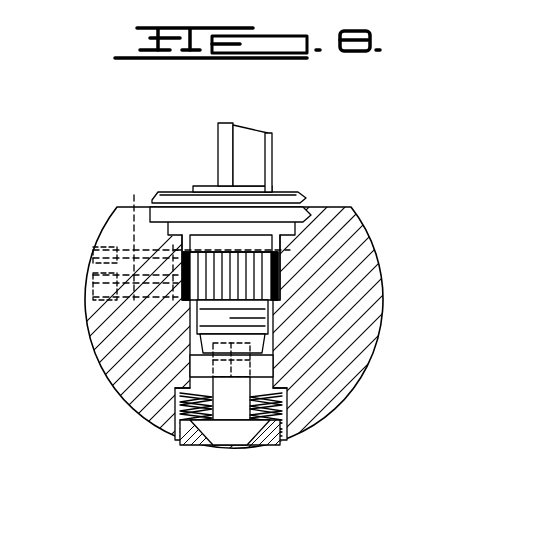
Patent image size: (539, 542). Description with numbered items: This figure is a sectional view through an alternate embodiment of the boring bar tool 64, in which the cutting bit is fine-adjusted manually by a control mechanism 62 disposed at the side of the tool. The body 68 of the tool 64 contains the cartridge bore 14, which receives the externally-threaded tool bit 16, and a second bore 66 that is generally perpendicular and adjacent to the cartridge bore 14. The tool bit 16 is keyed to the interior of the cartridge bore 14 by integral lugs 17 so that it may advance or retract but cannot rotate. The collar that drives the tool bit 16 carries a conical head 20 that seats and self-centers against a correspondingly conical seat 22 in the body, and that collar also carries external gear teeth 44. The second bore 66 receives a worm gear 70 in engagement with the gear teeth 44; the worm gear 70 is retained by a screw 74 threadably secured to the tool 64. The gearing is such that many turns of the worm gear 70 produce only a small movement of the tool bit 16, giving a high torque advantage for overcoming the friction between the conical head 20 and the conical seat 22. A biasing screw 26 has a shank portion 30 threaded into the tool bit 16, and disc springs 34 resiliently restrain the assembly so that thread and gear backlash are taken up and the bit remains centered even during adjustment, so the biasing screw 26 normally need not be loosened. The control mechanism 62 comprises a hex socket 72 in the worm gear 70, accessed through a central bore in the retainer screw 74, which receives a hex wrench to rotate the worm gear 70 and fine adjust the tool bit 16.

The cartridge bore 14 is at (195, 344).
The tool bit 16 is at (248, 154).
The integral lugs 17 is at (275, 364).
The conical head 20 is at (287, 213).
The conical seat 22 is at (170, 205).
The biasing screw 26 is at (212, 446).
The shank portion 30 is at (236, 443).
The disc springs 34 is at (276, 408).
The external gear teeth 44 is at (283, 285).
The control mechanism 62 is at (98, 280).
The tool 64 is at (397, 314).
The second bore 66 is at (298, 298).
The body 68 is at (132, 392).
The worm gear 70 is at (286, 263).
The hex socket 72 is at (123, 238).
The screw 74 is at (96, 259).